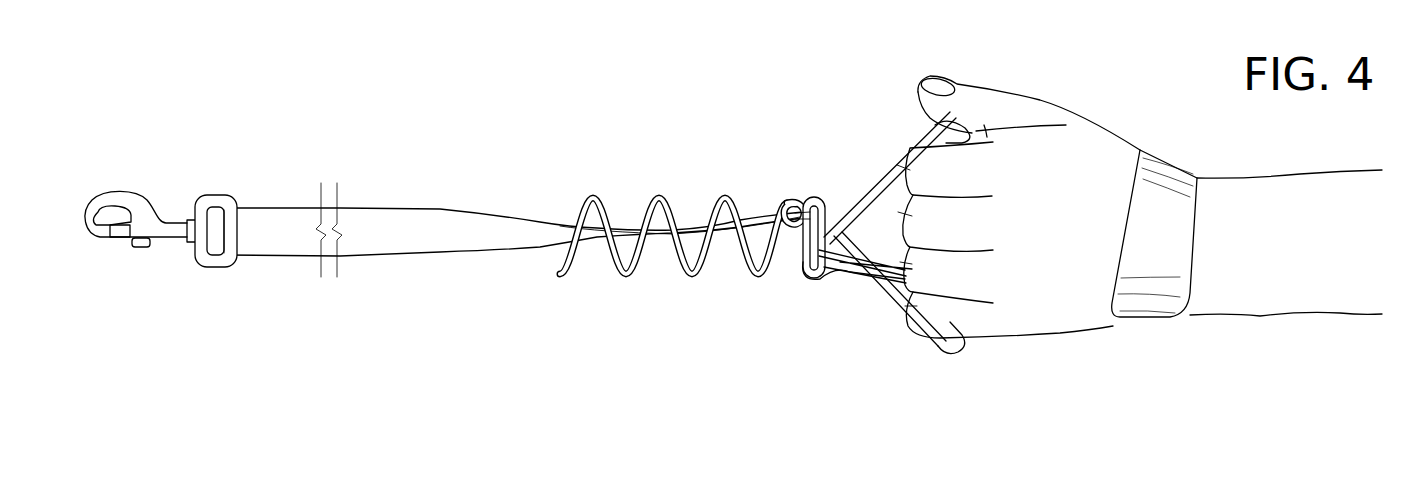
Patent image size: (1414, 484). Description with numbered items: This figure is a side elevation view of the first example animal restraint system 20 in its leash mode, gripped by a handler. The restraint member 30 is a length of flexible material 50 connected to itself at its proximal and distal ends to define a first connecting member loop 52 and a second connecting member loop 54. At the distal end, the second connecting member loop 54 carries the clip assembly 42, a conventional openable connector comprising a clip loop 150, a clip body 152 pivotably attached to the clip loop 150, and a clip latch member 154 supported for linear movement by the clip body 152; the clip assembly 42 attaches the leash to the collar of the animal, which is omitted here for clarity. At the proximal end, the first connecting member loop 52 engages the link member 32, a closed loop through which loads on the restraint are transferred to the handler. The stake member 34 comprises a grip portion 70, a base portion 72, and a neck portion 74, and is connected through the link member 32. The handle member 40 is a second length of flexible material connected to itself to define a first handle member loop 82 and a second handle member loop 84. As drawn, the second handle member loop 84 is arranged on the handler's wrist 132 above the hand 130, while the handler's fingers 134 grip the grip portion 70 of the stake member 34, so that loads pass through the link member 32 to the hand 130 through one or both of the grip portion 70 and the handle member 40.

The animal restraint system 20 is at (427, 133).
The restraint member 30 is at (373, 204).
The link member 32 is at (813, 226).
The stake member 34 is at (725, 190).
The handle member 40 is at (1170, 157).
The clip assembly 42 is at (152, 192).
The flexible material 50 is at (370, 242).
The first connecting member loop 52 is at (803, 196).
The second connecting member loop 54 is at (234, 240).
The grip portion 70 is at (887, 298).
The base portion 72 is at (683, 264).
The neck portion 74 is at (802, 238).
The first handle member loop 82 is at (820, 283).
The second handle member loop 84 is at (1147, 308).
The hand 130 is at (1090, 110).
The wrist 132 is at (1210, 294).
The fingers 134 is at (903, 217).
The clip loop 150 is at (213, 266).
The clip body 152 is at (162, 238).
The clip latch member 154 is at (117, 238).